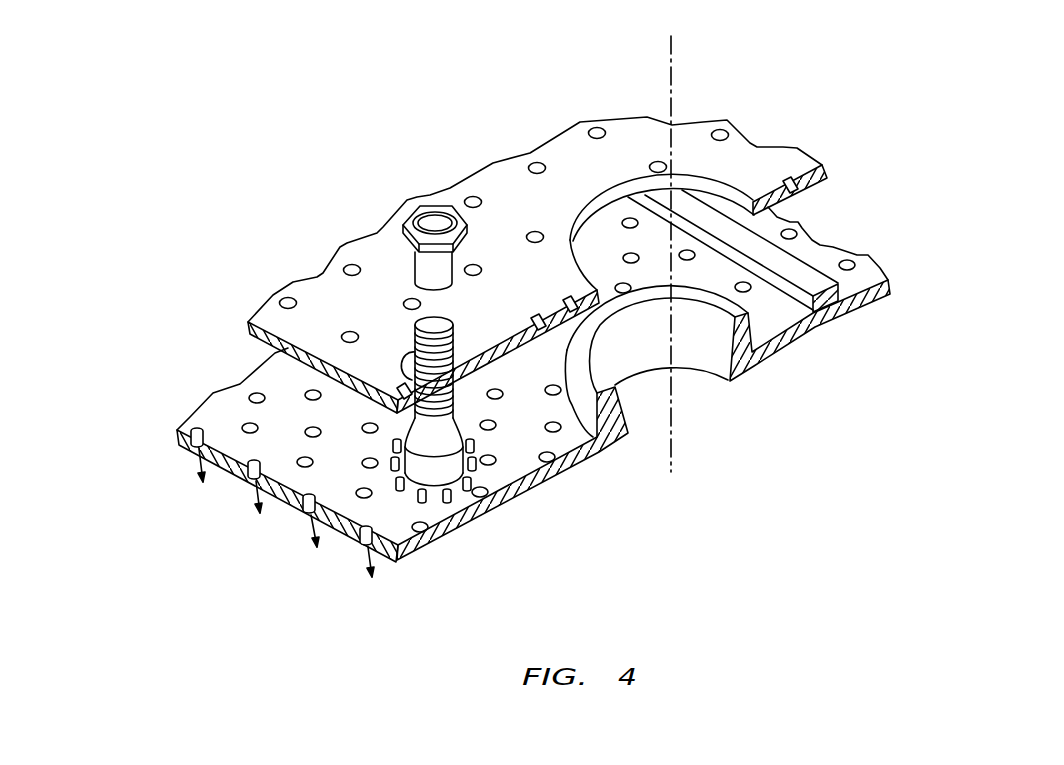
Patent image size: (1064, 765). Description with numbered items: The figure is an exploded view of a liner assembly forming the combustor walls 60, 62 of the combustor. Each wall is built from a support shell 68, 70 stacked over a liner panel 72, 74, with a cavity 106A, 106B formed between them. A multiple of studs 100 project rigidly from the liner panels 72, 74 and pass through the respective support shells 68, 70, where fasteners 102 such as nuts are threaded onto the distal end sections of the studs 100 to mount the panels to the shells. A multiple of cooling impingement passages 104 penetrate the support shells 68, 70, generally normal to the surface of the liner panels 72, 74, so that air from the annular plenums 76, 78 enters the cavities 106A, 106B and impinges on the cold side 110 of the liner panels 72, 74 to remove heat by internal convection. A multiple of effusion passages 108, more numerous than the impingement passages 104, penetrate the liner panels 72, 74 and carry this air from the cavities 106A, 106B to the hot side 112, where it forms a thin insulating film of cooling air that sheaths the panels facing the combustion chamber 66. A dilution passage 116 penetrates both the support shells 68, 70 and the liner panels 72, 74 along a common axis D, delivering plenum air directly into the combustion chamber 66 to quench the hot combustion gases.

The combustor wall 60 is at (578, 311).
The combustor wall 62 is at (1001, 100).
The combustion chamber 66 is at (793, 508).
The support shell 68 is at (589, 234).
The support shell 70 is at (802, 118).
The liner panel 72 is at (578, 390).
The liner panel 74 is at (923, 267).
The annular plenum 76 is at (535, 219).
The annular plenum 78 is at (353, 180).
The stud 100 is at (432, 332).
The fastener 102 is at (443, 205).
The cooling impingement passage 104 is at (537, 162).
The cavity 106A is at (236, 431).
The cavity 106B is at (220, 364).
The effusion passage 108 is at (846, 258).
The cold side 110 is at (507, 470).
The hot side 112 is at (480, 520).
The dilution passage 116 is at (689, 384).
The common axis D is at (672, 68).